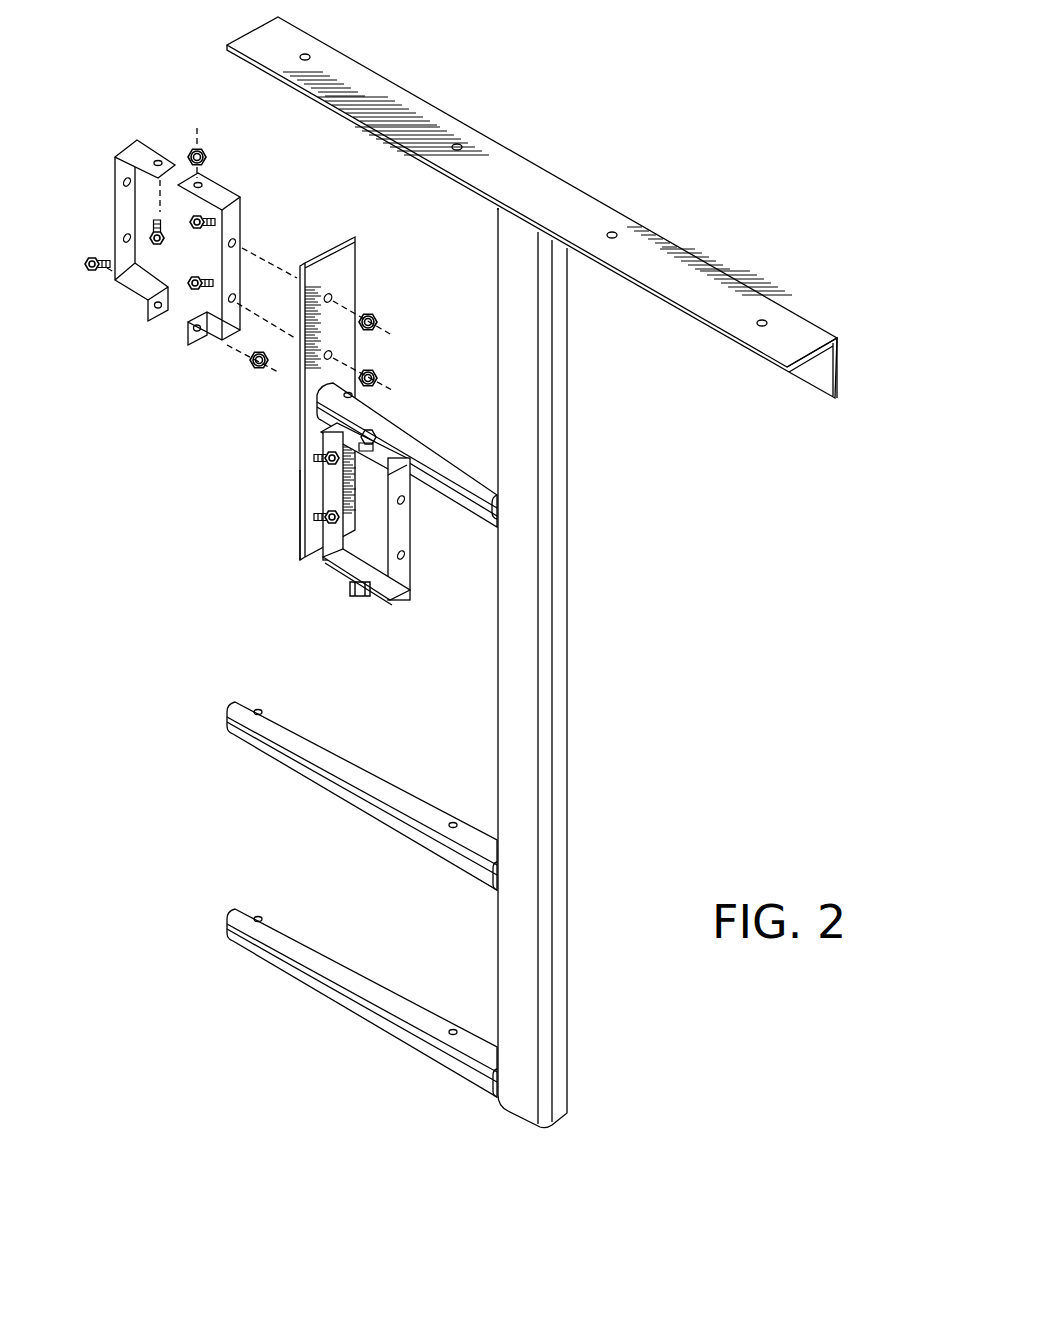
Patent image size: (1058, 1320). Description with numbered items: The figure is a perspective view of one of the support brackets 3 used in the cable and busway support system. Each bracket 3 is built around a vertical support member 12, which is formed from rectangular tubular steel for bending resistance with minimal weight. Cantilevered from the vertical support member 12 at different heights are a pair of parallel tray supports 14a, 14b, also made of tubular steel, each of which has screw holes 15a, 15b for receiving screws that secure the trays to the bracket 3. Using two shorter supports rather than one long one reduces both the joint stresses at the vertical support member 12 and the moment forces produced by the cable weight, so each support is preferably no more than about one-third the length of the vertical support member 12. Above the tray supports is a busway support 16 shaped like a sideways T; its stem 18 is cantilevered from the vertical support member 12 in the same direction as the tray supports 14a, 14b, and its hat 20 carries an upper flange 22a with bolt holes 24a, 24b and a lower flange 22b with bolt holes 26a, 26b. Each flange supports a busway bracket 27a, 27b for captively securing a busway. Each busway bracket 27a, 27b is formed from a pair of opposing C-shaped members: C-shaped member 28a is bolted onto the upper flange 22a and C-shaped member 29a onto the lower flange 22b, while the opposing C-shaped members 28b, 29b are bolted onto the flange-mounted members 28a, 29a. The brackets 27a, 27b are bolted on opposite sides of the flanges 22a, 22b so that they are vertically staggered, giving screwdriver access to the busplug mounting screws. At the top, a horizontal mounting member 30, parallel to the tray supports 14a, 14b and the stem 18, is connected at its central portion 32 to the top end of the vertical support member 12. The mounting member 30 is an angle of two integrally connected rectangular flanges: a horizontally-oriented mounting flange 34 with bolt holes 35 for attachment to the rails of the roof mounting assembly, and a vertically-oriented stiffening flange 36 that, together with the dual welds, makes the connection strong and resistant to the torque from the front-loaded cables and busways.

The bracket 3 is at (645, 115).
The vertical support member 12 is at (565, 695).
The tray support 14a is at (353, 767).
The tray support 14b is at (353, 973).
The screw hole 15a is at (257, 706).
The screw hole 15b is at (257, 913).
The busway support 16 is at (407, 473).
The stem 18 is at (478, 496).
The hat 20 is at (336, 402).
The upper flange 22a is at (338, 270).
The lower flange 22b is at (310, 545).
The bolt hole 24a is at (334, 298).
The bolt hole 24b is at (334, 352).
The bolt hole 26a is at (322, 456).
The bolt hole 26b is at (322, 513).
The busway bracket 27a is at (176, 235).
The busway bracket 27b is at (367, 546).
The C-shaped member 28a is at (133, 150).
The C-shaped member 28b is at (228, 188).
The C-shaped member 29a is at (400, 592).
The C-shaped member 29b is at (338, 566).
The horizontal mounting member 30 is at (508, 242).
The central portion 32 is at (508, 182).
The mounting flange 34 is at (805, 338).
The bolt hole 35 is at (613, 232).
The stiffening flange 36 is at (815, 377).